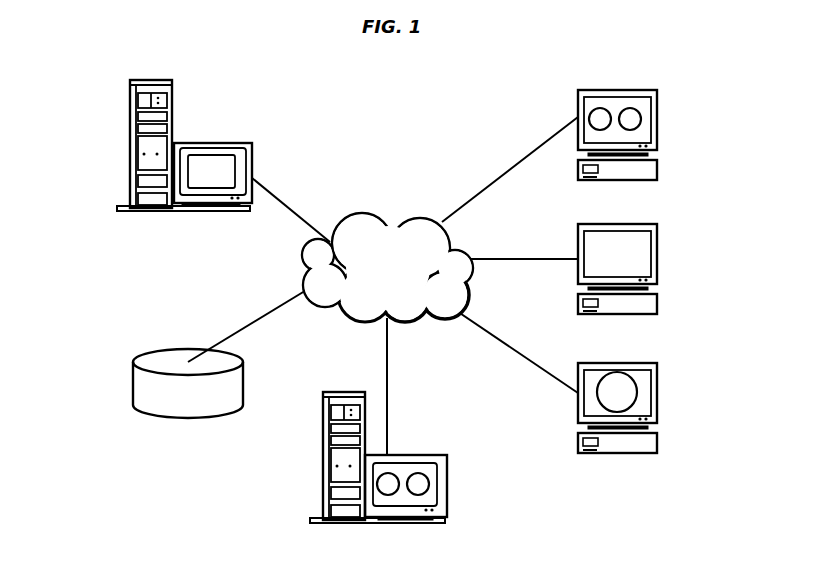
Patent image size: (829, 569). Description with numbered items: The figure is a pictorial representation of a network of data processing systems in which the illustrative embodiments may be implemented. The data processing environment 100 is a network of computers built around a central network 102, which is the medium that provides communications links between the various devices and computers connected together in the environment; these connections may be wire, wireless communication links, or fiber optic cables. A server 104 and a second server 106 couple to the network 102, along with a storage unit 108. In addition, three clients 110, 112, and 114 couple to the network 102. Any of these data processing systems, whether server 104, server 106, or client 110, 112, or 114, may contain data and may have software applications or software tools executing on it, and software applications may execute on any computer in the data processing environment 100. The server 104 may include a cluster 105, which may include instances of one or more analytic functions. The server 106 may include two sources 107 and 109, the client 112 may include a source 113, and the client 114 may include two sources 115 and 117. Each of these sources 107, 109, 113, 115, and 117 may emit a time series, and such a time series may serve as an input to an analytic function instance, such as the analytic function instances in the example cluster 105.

The data processing environment 100 is at (87, 101).
The network 102 is at (375, 283).
The server 104 is at (184, 156).
The cluster 105 is at (213, 151).
The server 106 is at (412, 467).
The source 107 is at (396, 472).
The storage unit 108 is at (175, 416).
The source 109 is at (428, 494).
The client 110 is at (658, 330).
The client 112 is at (652, 416).
The source 113 is at (637, 393).
The client 114 is at (644, 120).
The source 115 is at (642, 118).
The source 117 is at (596, 108).